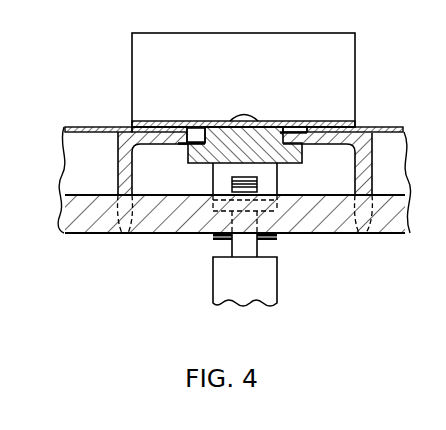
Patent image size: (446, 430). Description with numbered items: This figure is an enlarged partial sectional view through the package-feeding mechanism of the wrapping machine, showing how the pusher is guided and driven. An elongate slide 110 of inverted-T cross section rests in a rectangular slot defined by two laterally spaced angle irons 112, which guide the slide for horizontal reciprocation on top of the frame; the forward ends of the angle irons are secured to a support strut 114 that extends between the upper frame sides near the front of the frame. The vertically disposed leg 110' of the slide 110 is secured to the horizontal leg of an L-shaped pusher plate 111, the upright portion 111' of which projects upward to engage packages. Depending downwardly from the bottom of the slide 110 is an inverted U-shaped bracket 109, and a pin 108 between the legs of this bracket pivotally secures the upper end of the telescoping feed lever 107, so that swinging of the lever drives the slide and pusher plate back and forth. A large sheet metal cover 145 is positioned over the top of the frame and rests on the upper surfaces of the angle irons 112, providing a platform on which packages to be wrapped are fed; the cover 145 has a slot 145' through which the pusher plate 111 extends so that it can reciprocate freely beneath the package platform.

The actuating stem 107 is at (277, 275).
The pin 108 is at (210, 219).
The inverted U-shaped bracket 109 is at (278, 181).
The elongate slide 110 is at (232, 158).
The vertically disposed leg 110' is at (243, 111).
The L-shaped pusher plate 111 is at (261, 126).
The container 111' is at (270, 80).
The angle irons 112 is at (119, 159).
The support strut 114 is at (88, 226).
The sheet metal cover 145 is at (227, 162).
The slot 145' is at (178, 112).